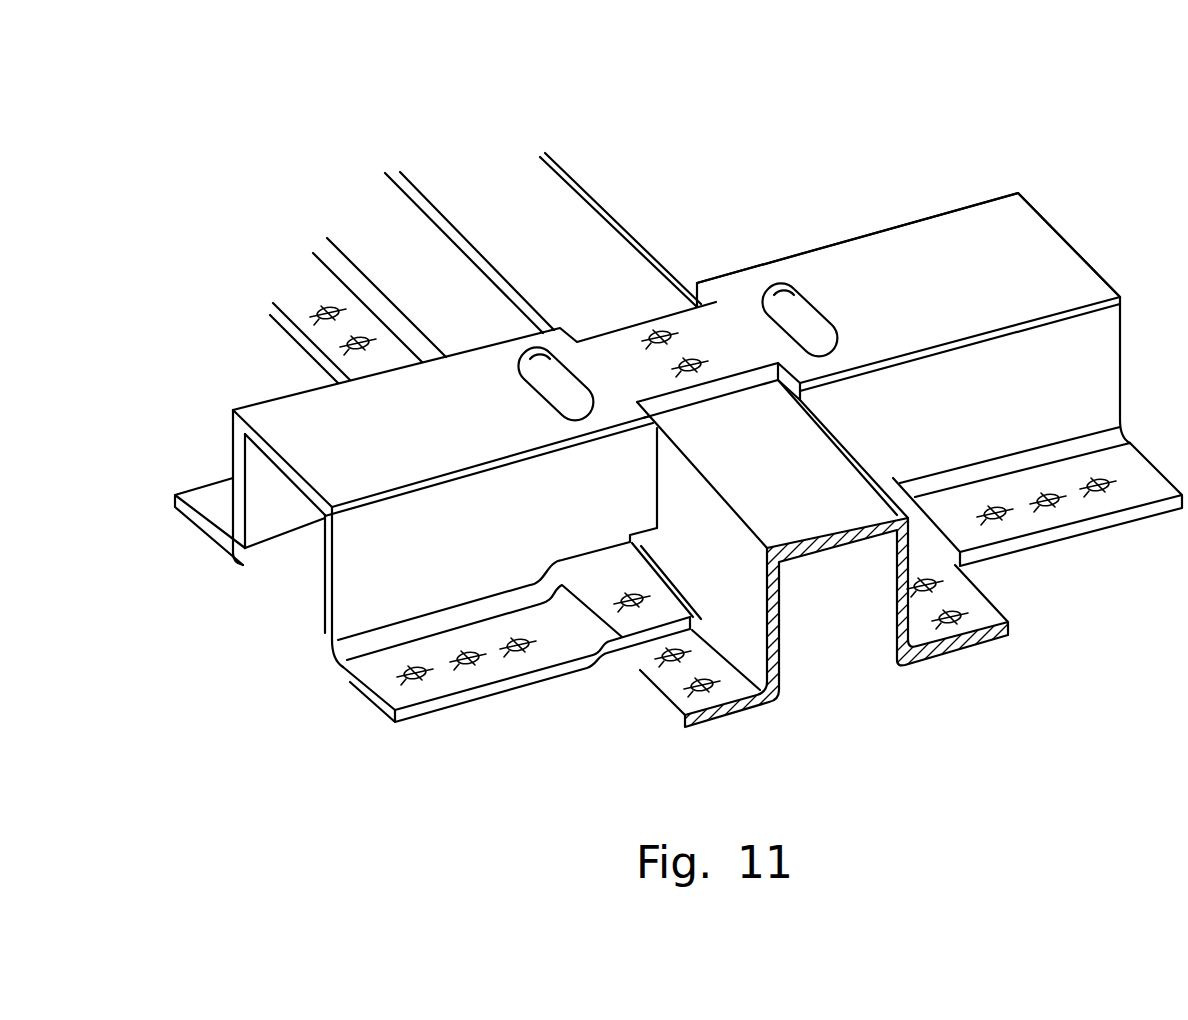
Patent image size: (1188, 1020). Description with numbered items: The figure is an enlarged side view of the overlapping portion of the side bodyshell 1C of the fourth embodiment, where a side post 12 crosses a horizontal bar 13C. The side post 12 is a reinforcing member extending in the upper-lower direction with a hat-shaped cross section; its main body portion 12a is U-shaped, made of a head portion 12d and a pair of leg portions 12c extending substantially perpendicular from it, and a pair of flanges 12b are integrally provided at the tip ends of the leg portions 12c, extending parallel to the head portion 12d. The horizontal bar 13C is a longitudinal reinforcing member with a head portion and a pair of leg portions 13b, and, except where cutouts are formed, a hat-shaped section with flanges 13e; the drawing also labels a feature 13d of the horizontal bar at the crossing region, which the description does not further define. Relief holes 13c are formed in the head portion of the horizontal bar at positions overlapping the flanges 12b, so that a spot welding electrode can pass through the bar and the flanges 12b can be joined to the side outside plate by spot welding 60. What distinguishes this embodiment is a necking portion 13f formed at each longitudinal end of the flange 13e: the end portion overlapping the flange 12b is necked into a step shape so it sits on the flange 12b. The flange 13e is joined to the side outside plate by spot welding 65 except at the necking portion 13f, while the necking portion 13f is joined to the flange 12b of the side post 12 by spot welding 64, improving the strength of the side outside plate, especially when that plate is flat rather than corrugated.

The side bodyshell 1C is at (1078, 128).
The side post 12 is at (667, 682).
The main body portion 12a is at (880, 462).
The flange 12b is at (727, 717).
The leg portion 12c is at (892, 600).
The head portion 12d is at (830, 450).
The leg portion 13b is at (243, 512).
The relief hole 13c is at (528, 372).
The horizontal bar 13C is at (872, 253).
The notch 13d is at (690, 345).
The flange 13e is at (208, 500).
The necking portion 13f is at (650, 635).
The spot welding 60 is at (346, 347).
The spot welding 64 is at (635, 590).
The spot welding 65 is at (520, 655).